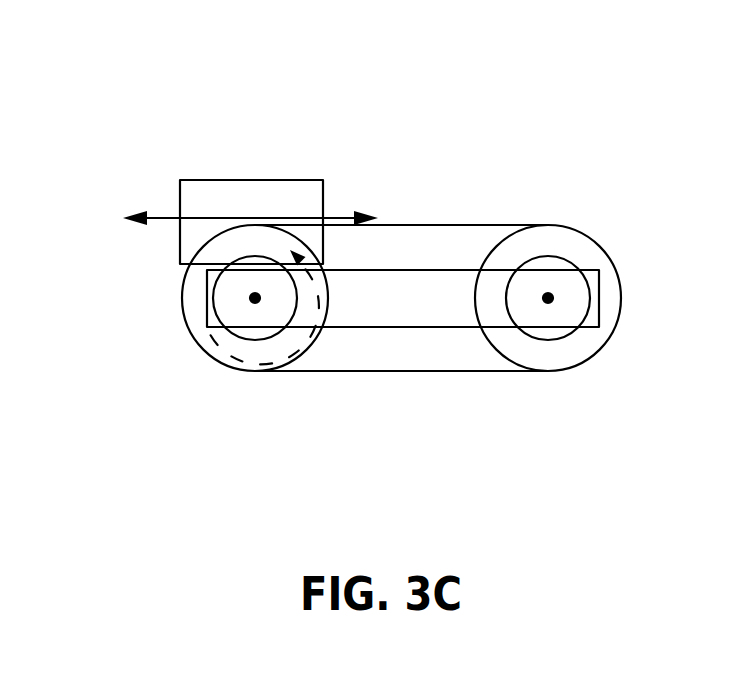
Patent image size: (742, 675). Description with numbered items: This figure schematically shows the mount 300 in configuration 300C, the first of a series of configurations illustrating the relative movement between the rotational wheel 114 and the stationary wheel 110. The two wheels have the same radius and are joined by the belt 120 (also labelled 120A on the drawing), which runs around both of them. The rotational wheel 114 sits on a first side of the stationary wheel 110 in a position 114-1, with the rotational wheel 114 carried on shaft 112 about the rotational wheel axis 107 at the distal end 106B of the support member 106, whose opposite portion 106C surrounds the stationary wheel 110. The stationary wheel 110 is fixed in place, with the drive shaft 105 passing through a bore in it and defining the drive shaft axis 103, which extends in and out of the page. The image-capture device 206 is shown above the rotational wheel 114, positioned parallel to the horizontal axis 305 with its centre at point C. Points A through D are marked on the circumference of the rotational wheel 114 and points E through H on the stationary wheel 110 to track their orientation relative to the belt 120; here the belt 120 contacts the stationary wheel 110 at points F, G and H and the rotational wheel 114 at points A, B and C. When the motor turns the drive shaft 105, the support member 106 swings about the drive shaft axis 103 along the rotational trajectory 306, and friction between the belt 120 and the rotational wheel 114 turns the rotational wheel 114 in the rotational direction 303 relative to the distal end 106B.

The configuration 300C is at (222, 90).
The mount 300 is at (180, 141).
The axis 305 is at (164, 218).
The image-capture device 206 is at (282, 180).
The belt 120 is at (392, 224).
The track belt outer surface 120A is at (411, 298).
The rotational wheel 114 is at (193, 289).
The position 114-1 is at (255, 298).
The stationary wheel 110 is at (603, 283).
The shaft 112 is at (252, 317).
The rotational wheel axis 107 is at (253, 300).
The drive shaft 105 is at (570, 300).
The drive shaft axis 103 is at (551, 301).
The support member 106 is at (392, 313).
The distal end 106B is at (333, 315).
The frame second end portion 106C is at (495, 307).
The rotational direction 303 is at (297, 330).
The rotational trajectory 306 is at (741, 53).